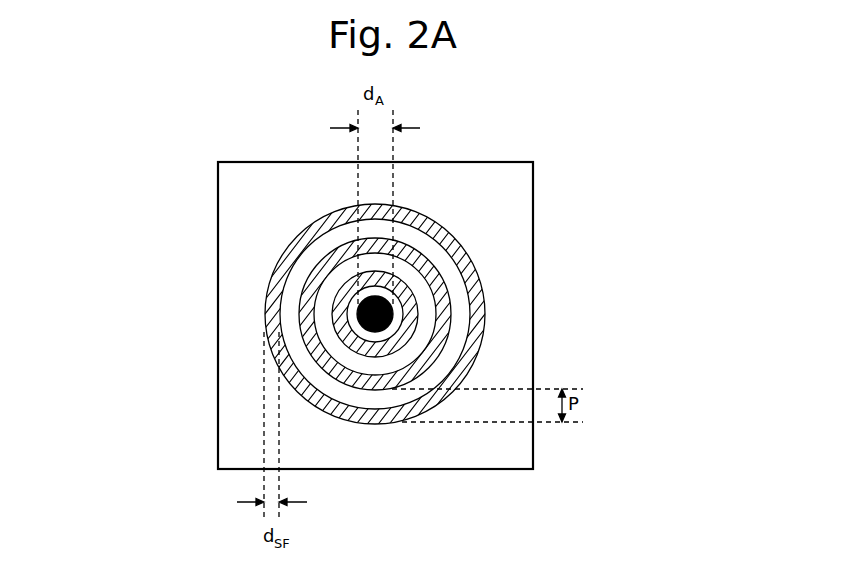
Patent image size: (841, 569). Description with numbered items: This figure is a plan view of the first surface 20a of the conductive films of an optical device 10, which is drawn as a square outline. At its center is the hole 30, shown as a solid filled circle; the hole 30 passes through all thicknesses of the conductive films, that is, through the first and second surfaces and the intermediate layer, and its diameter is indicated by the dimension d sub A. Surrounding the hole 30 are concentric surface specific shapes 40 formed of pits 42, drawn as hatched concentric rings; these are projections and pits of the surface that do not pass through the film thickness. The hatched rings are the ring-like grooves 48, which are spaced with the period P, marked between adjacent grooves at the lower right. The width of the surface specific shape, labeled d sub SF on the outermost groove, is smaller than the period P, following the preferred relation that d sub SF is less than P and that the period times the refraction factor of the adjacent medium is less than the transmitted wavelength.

The optical device 10 is at (217, 336).
The first surface 20a is at (230, 208).
The hole 30 is at (397, 318).
The surface specific shape 40 is at (409, 264).
The pits 42 is at (447, 262).
The ring-like grooves 48 is at (470, 335).